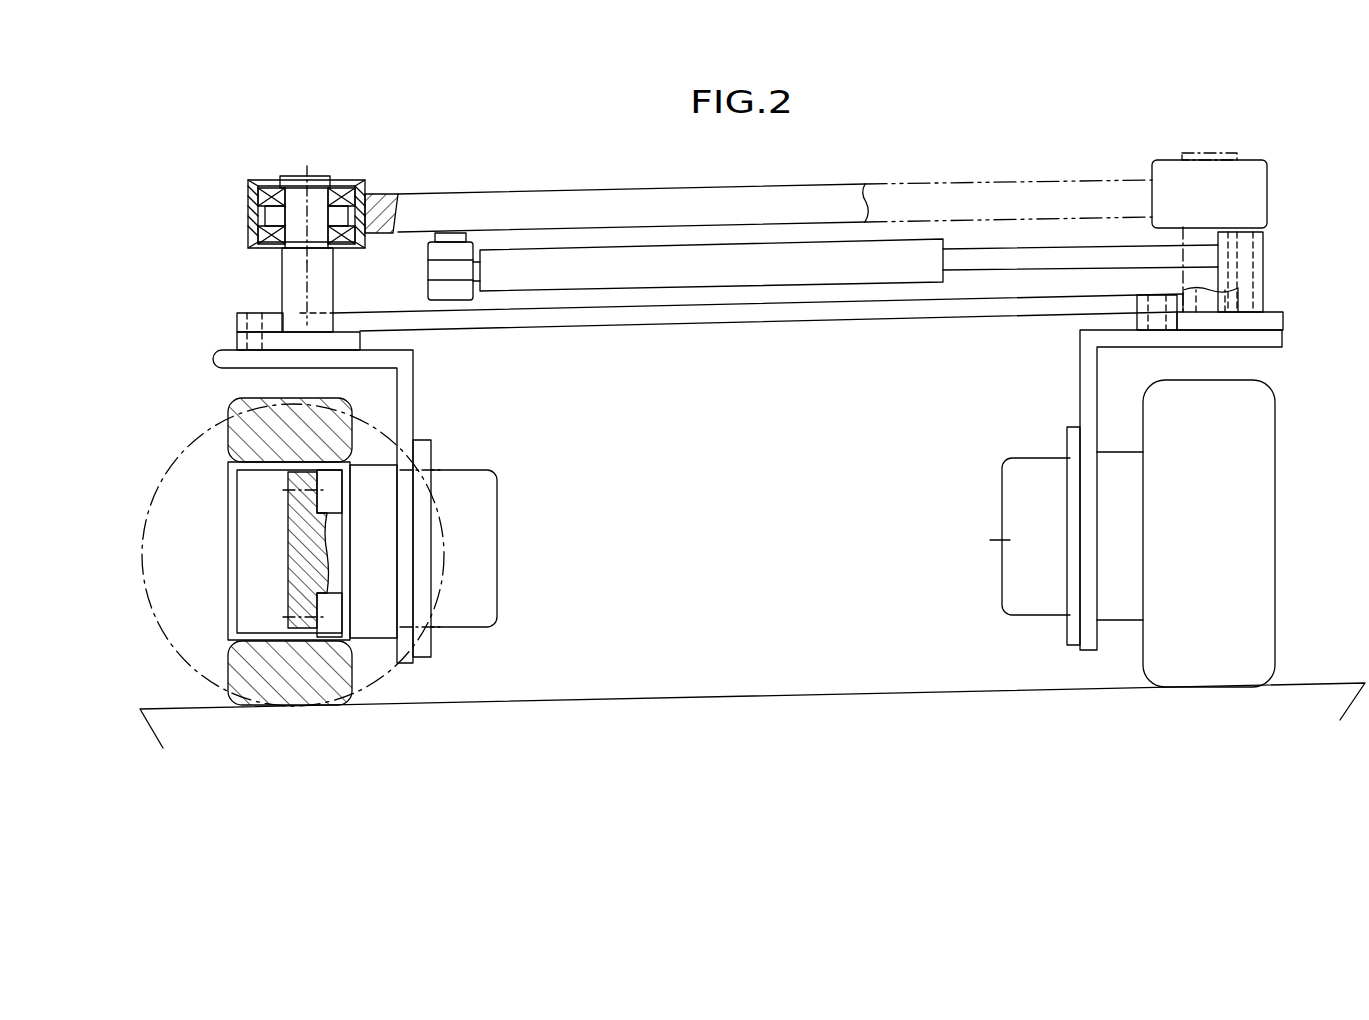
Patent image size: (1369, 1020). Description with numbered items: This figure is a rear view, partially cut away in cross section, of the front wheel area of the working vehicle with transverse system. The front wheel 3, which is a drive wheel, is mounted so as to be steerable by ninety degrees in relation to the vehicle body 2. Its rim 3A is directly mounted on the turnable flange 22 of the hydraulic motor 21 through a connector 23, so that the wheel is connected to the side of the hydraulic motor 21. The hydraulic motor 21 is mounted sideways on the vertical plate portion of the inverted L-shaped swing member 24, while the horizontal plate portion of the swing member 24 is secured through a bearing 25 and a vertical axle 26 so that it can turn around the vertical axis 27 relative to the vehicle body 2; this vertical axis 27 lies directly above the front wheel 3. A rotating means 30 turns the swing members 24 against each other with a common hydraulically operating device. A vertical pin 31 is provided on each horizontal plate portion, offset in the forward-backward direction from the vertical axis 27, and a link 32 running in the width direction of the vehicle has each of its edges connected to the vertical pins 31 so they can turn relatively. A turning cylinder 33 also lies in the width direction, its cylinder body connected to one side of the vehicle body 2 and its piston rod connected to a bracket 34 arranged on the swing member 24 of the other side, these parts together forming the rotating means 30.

The vehicle body 2 is at (760, 198).
The front wheel 3 is at (295, 690).
The rim 3A is at (265, 557).
The hydraulic motor 21 is at (483, 570).
The turnable flange 22 is at (292, 530).
The connector 23 is at (300, 612).
The swing member 24 is at (405, 390).
The bearing 25 is at (250, 234).
The vertical axle 26 is at (300, 315).
The vertical axis 27 is at (305, 288).
The rotating means 30 is at (722, 362).
The vertical pin 31 is at (237, 345).
The link 32 is at (626, 322).
The turning cylinder 33 is at (822, 270).
The bracket 34 is at (1285, 320).